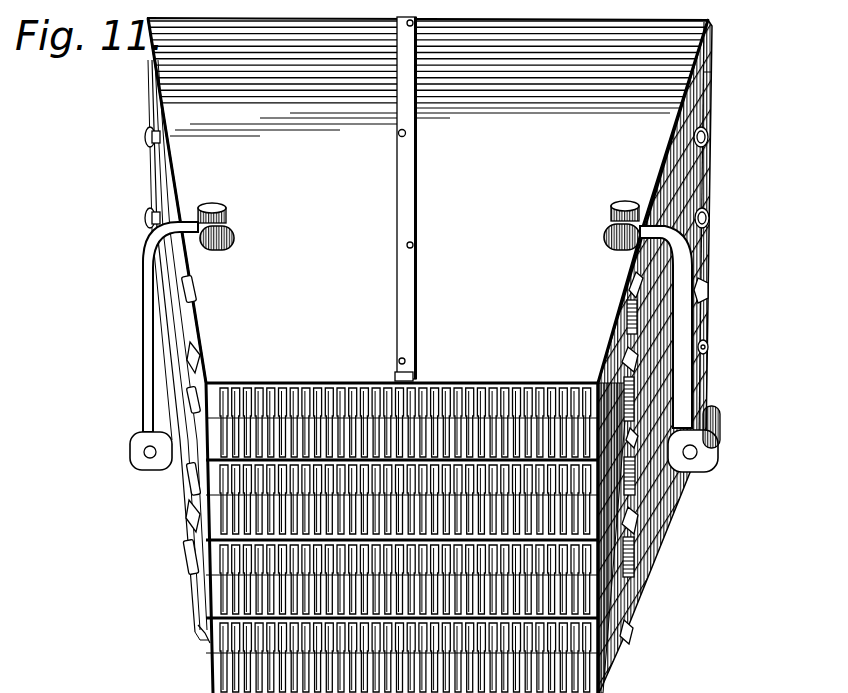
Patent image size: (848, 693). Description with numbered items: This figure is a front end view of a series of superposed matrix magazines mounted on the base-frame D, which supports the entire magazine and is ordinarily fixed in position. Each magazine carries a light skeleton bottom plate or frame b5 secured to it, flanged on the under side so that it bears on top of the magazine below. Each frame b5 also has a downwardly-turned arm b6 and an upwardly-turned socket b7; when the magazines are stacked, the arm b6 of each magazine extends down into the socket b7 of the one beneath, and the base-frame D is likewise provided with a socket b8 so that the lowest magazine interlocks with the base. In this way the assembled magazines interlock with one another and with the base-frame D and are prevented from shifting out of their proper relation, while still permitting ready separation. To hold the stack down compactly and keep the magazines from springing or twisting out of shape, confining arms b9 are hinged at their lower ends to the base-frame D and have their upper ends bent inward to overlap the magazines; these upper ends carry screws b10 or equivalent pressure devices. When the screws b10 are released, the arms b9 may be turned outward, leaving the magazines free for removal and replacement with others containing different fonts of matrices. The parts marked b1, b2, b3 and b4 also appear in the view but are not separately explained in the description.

The upper side plate strip b1 is at (716, 61).
The fastening bolt b2 is at (716, 126).
The fastening bolt b3 is at (712, 206).
The lower end plate b4 is at (712, 269).
The skeleton bottom plate or frame b5 is at (710, 91).
The downwardly-turned arm b6 is at (190, 354).
The upwardly-turned socket b7 is at (196, 310).
The socket b8 is at (640, 540).
The arms b9 is at (136, 332).
The screws b10 is at (219, 203).
The base-frame D is at (636, 595).